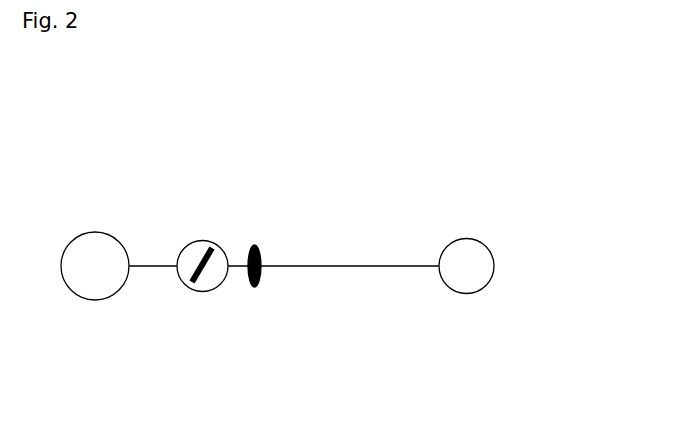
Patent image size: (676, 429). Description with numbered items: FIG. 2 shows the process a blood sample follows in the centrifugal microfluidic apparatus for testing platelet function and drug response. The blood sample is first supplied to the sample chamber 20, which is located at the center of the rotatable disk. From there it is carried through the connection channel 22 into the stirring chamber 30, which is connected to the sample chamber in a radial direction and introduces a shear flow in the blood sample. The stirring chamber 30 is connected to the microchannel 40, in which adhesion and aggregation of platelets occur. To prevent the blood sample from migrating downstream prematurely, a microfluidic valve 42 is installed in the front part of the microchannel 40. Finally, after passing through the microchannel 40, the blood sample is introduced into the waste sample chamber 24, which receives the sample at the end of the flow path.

The sample chamber 20 is at (100, 300).
The connection channel 22 is at (153, 265).
The waste sample chamber 24 is at (463, 238).
The stirring chamber 30 is at (209, 291).
The microchannel 40 is at (357, 265).
The microfluidic valve 42 is at (254, 243).